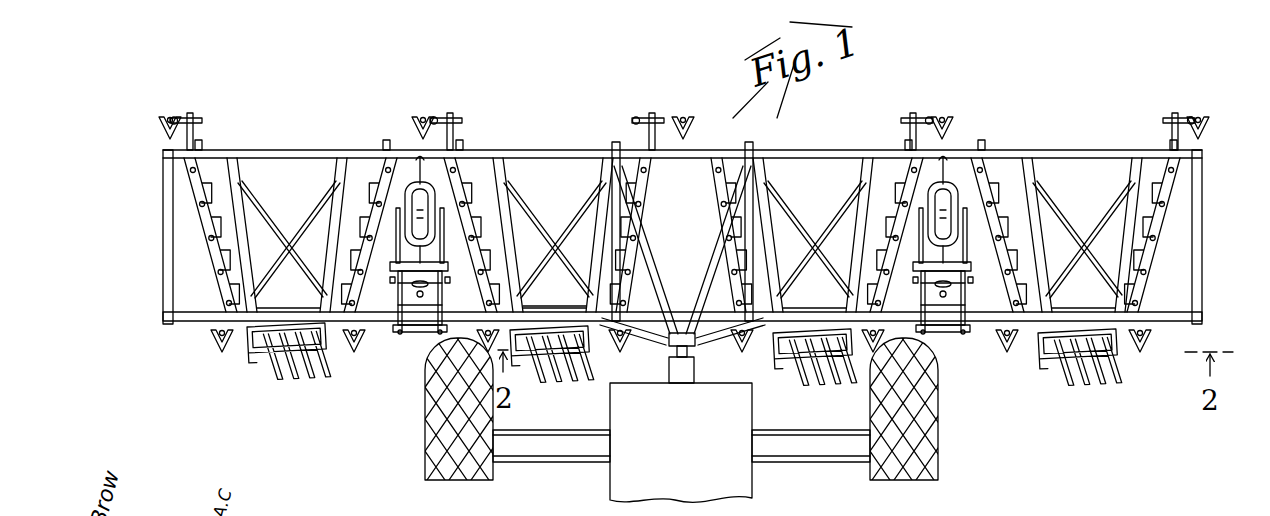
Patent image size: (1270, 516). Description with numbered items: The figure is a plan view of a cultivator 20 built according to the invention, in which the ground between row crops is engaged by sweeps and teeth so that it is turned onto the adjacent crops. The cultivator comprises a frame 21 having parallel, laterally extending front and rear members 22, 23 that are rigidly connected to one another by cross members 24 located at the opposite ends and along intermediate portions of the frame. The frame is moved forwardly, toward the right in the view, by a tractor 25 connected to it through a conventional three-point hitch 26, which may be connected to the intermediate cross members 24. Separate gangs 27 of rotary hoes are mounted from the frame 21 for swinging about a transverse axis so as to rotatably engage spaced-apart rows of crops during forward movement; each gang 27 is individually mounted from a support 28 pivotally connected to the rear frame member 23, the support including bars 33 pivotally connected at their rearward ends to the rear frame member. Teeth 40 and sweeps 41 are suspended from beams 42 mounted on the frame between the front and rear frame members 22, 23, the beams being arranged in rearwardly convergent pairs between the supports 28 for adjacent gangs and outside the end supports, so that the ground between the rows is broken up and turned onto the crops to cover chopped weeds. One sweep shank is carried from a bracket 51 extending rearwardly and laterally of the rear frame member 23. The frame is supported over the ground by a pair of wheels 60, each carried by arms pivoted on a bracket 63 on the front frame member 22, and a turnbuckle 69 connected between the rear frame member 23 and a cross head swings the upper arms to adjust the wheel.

The cultivator 20 is at (826, 148).
The frame 21 is at (330, 150).
The front frame member 22 is at (378, 328).
The rear frame member 23 is at (274, 150).
The cross members 24 is at (165, 188).
The tractor 25 is at (754, 490).
The three-point hitch 26 is at (708, 338).
The gangs of rotary hoes 27 is at (252, 372).
The support 28 is at (345, 207).
The bars 33 is at (520, 301).
The teeth 40 is at (463, 178).
The sweeps 41 is at (690, 122).
The beams 42 is at (209, 257).
The bracket 51 is at (653, 117).
The wheels 60 is at (416, 158).
The bracket 63 is at (952, 333).
The turnbuckle 69 is at (443, 207).